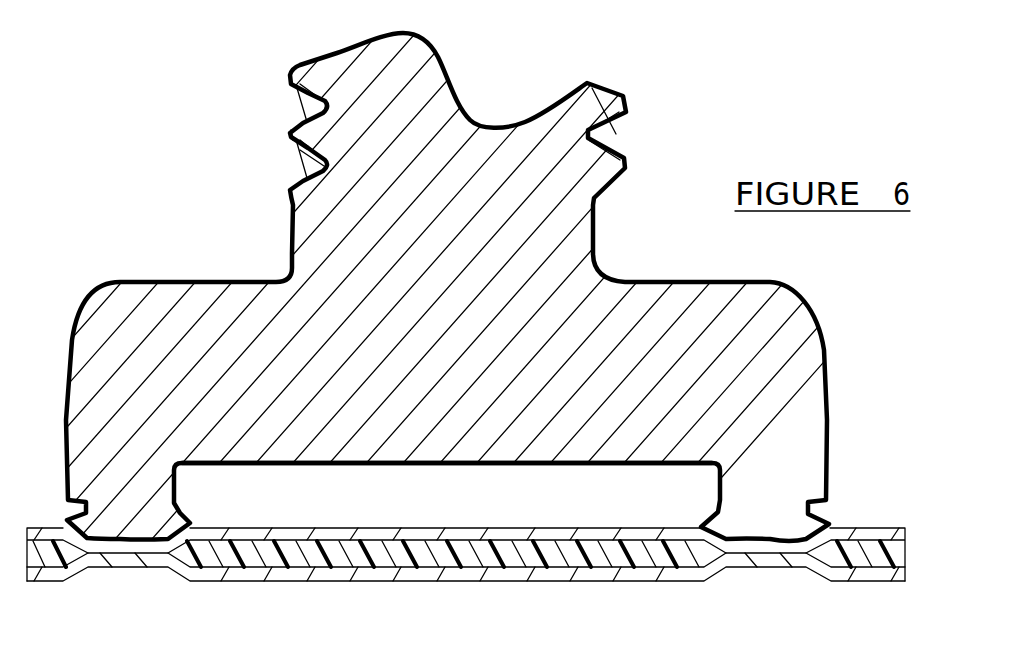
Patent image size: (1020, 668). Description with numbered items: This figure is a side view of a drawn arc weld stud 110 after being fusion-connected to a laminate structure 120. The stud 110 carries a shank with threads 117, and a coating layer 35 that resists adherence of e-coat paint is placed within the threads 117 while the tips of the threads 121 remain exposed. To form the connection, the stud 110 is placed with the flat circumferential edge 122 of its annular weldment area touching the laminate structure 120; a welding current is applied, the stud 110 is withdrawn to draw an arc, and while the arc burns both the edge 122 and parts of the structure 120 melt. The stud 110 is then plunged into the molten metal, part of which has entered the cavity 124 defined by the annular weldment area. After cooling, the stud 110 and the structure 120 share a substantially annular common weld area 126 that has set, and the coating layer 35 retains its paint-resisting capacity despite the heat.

The drawn arc weld stud 110 is at (608, 98).
The coating layer 35 is at (290, 80).
The tips of the threads 121 is at (291, 131).
The threads 117 is at (308, 138).
The cavity 124 is at (583, 478).
The circumferential edge 122 is at (178, 540).
The laminate structure 120 is at (323, 563).
The common weld area 126 is at (150, 520).